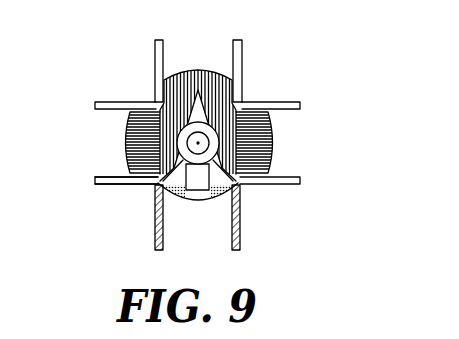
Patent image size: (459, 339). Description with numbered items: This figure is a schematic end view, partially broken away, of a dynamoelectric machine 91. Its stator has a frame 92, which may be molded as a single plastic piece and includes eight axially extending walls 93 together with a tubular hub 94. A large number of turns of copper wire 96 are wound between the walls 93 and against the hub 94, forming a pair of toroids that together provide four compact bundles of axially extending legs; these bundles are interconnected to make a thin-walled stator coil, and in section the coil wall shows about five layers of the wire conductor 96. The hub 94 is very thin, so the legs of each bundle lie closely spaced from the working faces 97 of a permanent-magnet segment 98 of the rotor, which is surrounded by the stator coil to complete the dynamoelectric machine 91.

The dynamoelectric machine 91 is at (253, 50).
The frame 92 is at (128, 186).
The axially extending walls 93 is at (234, 48).
The tubular hub 94 is at (195, 202).
The copper wire 96 is at (273, 143).
The working faces 97 is at (207, 203).
The permanent-magnet segment 98 is at (208, 187).